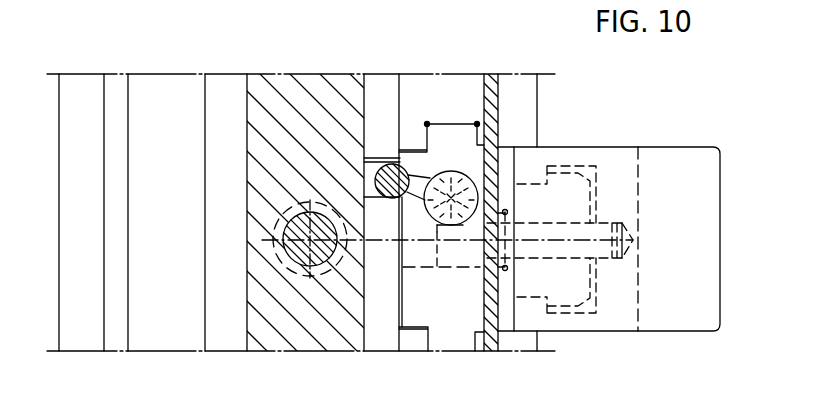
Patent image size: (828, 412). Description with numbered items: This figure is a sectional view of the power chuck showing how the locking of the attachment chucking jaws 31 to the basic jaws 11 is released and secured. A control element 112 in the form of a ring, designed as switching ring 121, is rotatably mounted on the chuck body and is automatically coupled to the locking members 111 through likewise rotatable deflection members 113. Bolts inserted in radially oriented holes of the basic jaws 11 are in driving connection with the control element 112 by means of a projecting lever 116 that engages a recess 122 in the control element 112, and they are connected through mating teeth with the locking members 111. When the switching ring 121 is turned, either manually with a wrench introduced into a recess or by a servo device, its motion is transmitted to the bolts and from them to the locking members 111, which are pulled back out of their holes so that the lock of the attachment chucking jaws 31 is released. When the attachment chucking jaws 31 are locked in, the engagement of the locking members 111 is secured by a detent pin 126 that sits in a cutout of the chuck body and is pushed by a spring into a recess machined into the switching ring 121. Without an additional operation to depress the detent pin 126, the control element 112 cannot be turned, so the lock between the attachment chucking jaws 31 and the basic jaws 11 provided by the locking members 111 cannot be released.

The basic jaws 11 is at (451, 137).
The attachment chucking jaws 31 is at (588, 147).
The locking members 111 is at (604, 233).
The control element 112 is at (240, 152).
The deflection members 113 is at (454, 170).
The projecting lever 116 is at (387, 163).
The switching ring 121 is at (267, 105).
The recess 122 is at (377, 158).
The detent pin 126 is at (324, 256).